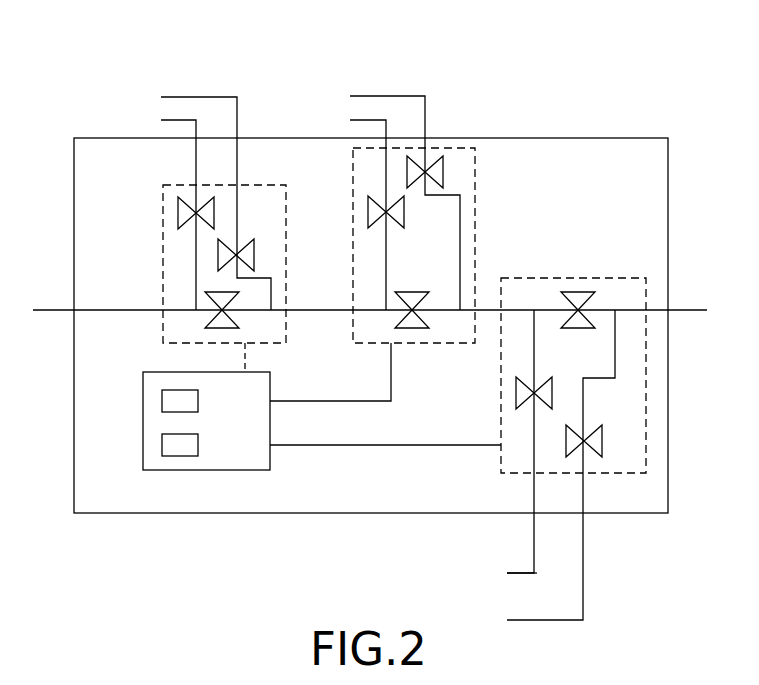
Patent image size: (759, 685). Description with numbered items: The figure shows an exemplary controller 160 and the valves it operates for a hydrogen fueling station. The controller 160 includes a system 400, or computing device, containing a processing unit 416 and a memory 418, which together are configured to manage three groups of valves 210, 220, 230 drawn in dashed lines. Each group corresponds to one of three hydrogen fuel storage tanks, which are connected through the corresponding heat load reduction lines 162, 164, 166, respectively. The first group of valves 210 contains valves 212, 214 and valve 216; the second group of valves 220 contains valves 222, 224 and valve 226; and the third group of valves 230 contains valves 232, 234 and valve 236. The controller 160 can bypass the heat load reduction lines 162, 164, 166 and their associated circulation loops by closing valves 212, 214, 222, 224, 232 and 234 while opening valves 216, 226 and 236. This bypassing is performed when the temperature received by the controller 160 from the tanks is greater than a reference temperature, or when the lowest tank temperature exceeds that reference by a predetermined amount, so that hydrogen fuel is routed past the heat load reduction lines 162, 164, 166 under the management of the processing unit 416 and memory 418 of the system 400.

The controller 160 is at (89, 132).
The heat load reduction line 162 is at (392, 95).
The heat load reduction line 164 is at (200, 97).
The heat load reduction line 166 is at (522, 573).
The group of valves 210 is at (163, 189).
The valve 212 is at (178, 218).
The valve 214 is at (255, 250).
The valve 216 is at (232, 298).
The group of valves 220 is at (353, 168).
The valve 222 is at (404, 215).
The valve 224 is at (443, 170).
The valve 226 is at (412, 328).
The group of valves 230 is at (627, 278).
The valve 232 is at (517, 393).
The valve 234 is at (603, 441).
The valve 236 is at (578, 292).
The system 400 is at (143, 393).
The processing unit 416 is at (198, 400).
The memory 418 is at (198, 444).